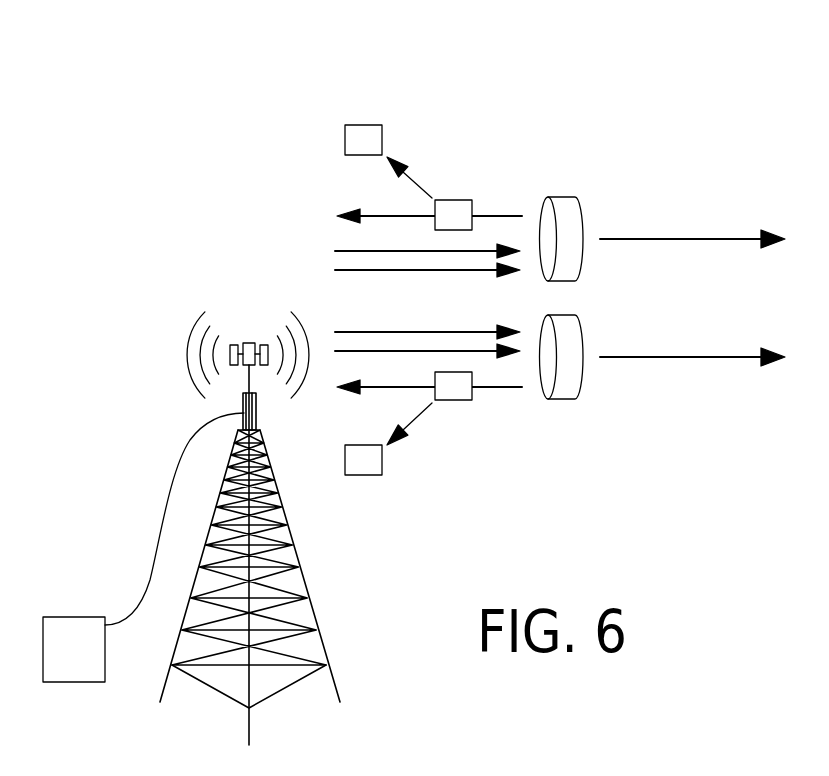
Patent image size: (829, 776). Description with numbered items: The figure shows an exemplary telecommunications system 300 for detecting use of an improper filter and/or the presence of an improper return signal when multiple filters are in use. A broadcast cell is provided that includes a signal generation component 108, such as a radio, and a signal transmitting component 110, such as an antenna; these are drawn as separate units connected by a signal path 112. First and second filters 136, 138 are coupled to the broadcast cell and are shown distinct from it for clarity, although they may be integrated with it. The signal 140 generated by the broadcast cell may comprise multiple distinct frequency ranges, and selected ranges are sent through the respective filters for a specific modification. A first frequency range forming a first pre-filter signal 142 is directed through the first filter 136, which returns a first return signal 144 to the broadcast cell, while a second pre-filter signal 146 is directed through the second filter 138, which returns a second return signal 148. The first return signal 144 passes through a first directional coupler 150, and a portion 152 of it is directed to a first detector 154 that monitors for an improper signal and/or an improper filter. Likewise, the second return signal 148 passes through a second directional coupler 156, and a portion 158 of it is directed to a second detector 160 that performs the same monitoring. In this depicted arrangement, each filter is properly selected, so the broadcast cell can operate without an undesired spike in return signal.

The signal generation component 108 is at (83, 617).
The signal transmitting component 110 is at (249, 343).
The signal path 112 is at (180, 479).
The first filter 136 is at (562, 197).
The second filter 138 is at (563, 399).
The signal 140 is at (696, 243).
The first pre-filter signal 142 is at (467, 272).
The first return signal 144 is at (500, 210).
The second pre-filter signal 146 is at (395, 330).
The second return signal 148 is at (500, 390).
The first directional coupler 150 is at (455, 200).
The portion of the first return signal 152 is at (413, 180).
The first detector 154 is at (368, 125).
The second directional coupler 156 is at (455, 400).
The portion of the second return signal 158 is at (413, 422).
The second detector 160 is at (368, 476).
The telecommunications system 300 is at (614, 63).